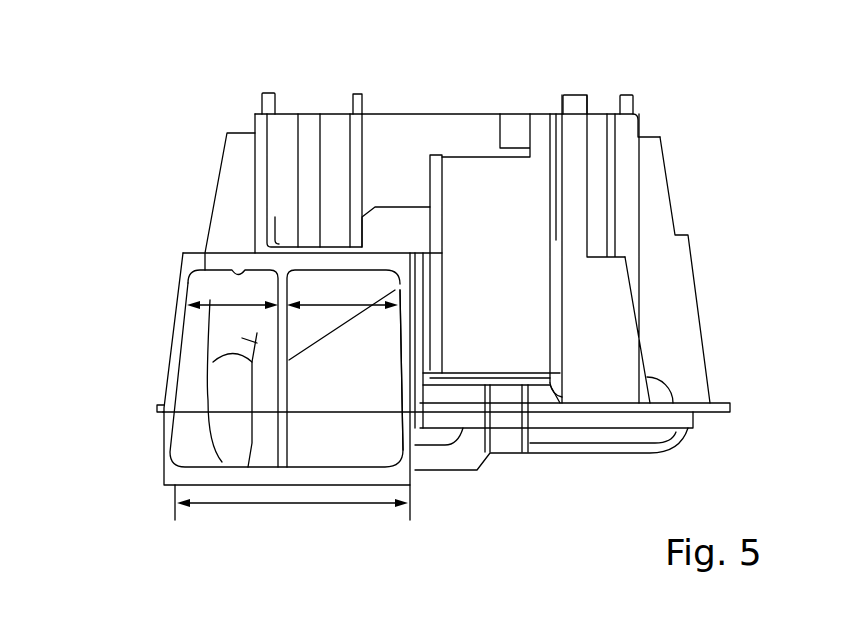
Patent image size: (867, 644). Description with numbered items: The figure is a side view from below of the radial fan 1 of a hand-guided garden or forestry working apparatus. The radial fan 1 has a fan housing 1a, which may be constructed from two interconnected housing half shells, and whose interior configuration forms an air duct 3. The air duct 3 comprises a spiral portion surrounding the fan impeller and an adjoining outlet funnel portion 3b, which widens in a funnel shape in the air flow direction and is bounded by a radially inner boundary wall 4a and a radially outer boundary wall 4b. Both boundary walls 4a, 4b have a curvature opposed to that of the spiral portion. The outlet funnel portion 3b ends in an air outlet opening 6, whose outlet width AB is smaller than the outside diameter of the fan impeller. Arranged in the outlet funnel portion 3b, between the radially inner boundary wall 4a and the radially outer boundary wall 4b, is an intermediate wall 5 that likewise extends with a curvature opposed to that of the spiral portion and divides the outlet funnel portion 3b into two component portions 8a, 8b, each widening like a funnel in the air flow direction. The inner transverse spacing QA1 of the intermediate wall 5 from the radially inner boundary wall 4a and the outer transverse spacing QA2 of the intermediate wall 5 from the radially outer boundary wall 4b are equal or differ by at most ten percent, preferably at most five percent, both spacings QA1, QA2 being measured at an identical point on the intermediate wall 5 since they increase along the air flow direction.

The radial fan 1 is at (684, 113).
The fan housing 1a is at (698, 370).
The air duct 3 is at (190, 433).
The outlet funnel portion 3b is at (303, 445).
The radially inner boundary wall 4a is at (400, 350).
The radially outer boundary wall 4b is at (165, 398).
The intermediate wall 5 is at (277, 315).
The air outlet opening 6 is at (230, 270).
The component portion 8a is at (380, 429).
The component portion 8b is at (227, 382).
The inner transverse spacing QA1 is at (330, 305).
The outer transverse spacing QA2 is at (223, 303).
The outlet width AB is at (308, 503).